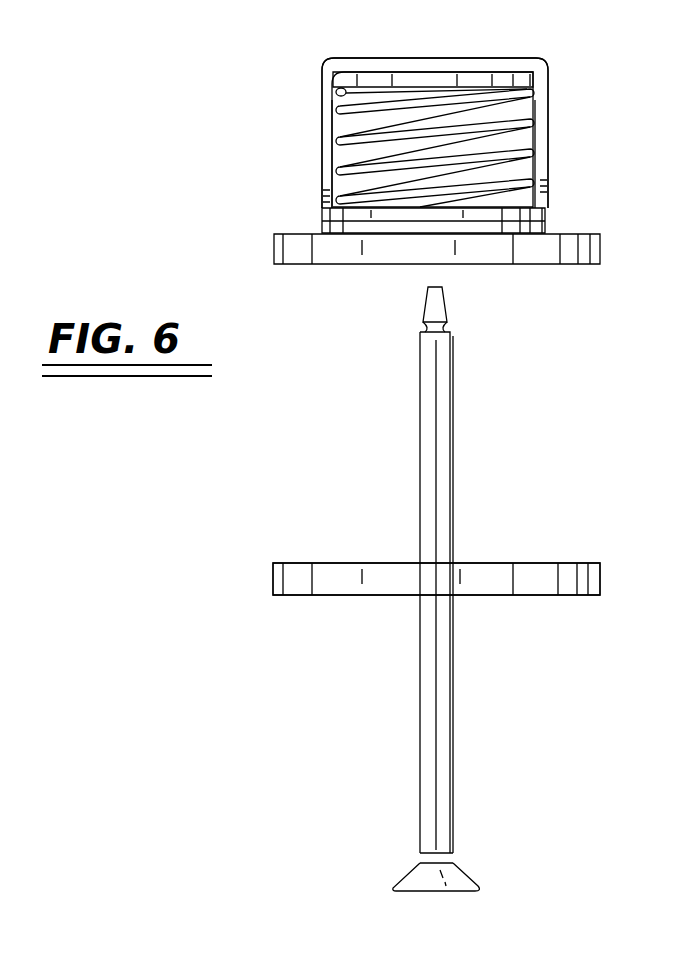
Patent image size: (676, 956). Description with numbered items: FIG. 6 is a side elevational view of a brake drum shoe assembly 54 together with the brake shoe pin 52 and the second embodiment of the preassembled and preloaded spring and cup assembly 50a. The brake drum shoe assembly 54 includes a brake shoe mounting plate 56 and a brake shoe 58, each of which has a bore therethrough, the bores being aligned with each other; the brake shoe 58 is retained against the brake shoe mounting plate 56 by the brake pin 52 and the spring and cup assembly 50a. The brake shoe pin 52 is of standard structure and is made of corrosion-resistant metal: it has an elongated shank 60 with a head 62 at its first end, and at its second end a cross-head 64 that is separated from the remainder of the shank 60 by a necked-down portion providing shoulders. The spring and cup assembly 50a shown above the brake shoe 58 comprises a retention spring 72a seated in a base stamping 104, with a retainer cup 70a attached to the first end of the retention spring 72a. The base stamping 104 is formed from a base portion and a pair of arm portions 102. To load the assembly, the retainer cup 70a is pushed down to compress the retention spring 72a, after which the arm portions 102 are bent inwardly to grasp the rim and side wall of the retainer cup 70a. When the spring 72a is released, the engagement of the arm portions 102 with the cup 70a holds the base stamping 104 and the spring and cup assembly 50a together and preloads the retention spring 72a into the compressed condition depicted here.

The spring and cup assembly 50a is at (316, 62).
The retainer cup 70a is at (487, 63).
The arm portions 102 is at (326, 113).
The retention spring 72a is at (517, 167).
The base stamping 104 is at (319, 226).
The brake shoe 58 is at (333, 258).
The brake shoe pin 52 is at (436, 589).
The cross-head 64 is at (448, 314).
The elongated shank 60 is at (453, 482).
The brake drum shoe assembly 54 is at (336, 548).
The brake shoe mounting plate 56 is at (340, 595).
The head 62 is at (478, 892).